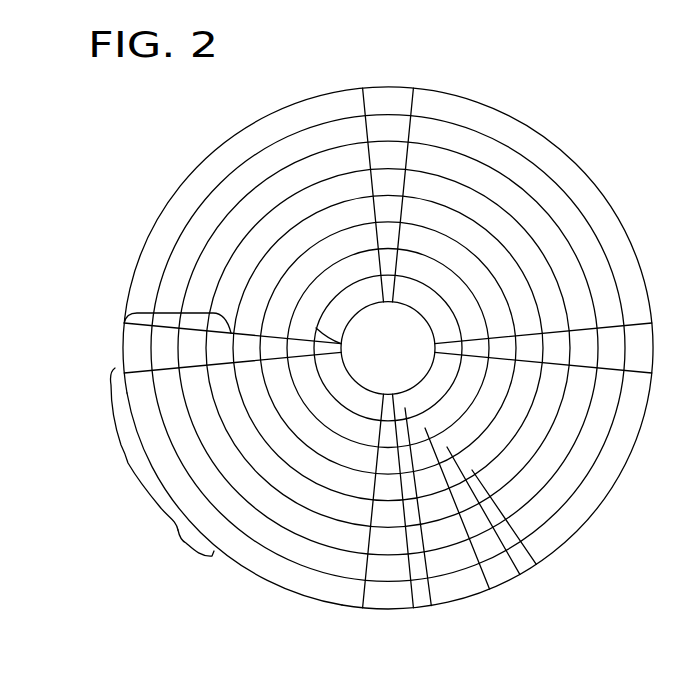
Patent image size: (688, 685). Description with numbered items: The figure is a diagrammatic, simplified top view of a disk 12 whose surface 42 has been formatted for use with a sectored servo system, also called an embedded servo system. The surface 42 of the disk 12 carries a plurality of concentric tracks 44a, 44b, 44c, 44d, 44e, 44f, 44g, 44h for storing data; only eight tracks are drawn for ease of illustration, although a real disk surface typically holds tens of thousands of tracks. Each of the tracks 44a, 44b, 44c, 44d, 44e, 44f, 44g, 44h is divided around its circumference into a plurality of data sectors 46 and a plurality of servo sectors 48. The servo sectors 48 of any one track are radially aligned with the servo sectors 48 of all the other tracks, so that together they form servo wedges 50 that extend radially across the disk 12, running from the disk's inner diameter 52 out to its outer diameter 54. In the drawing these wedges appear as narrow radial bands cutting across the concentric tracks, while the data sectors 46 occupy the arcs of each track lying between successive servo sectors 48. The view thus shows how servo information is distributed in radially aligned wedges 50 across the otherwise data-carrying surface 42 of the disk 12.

The disk 12 is at (265, 115).
The surface 42 is at (197, 233).
The track 44a is at (452, 105).
The track 44b is at (488, 147).
The track 44c is at (487, 180).
The track 44d is at (483, 205).
The track 44e is at (536, 564).
The track 44f is at (520, 574).
The track 44g is at (490, 589).
The track 44h is at (431, 606).
The data sector 46 is at (120, 455).
The servo sector 48 is at (187, 543).
The servo wedge 50 is at (226, 314).
The inner diameter 52 is at (348, 373).
The outer diameter 54 is at (265, 583).